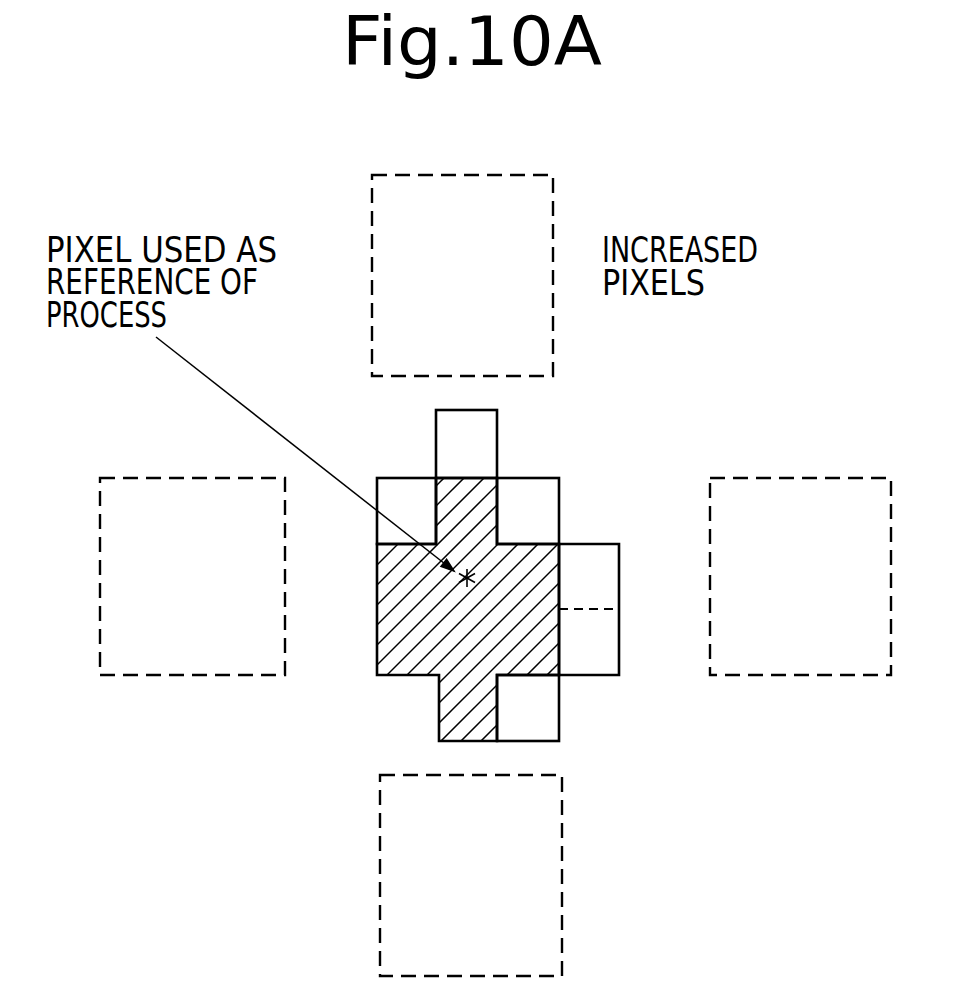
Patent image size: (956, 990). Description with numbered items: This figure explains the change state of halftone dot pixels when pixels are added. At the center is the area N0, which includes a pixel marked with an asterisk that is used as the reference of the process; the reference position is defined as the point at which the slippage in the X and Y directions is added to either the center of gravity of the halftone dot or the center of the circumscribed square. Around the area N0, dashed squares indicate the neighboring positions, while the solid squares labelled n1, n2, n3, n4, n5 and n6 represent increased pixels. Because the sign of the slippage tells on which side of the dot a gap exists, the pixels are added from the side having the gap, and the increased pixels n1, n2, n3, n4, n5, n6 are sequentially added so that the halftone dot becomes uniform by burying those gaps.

The area N0 is at (402, 676).
The increased pixel n1 is at (647, 307).
The increased pixel n2 is at (647, 307).
The increased pixel n3 is at (647, 307).
The increased pixel n4 is at (647, 307).
The increased pixel n5 is at (647, 307).
The increased pixel n6 is at (647, 307).